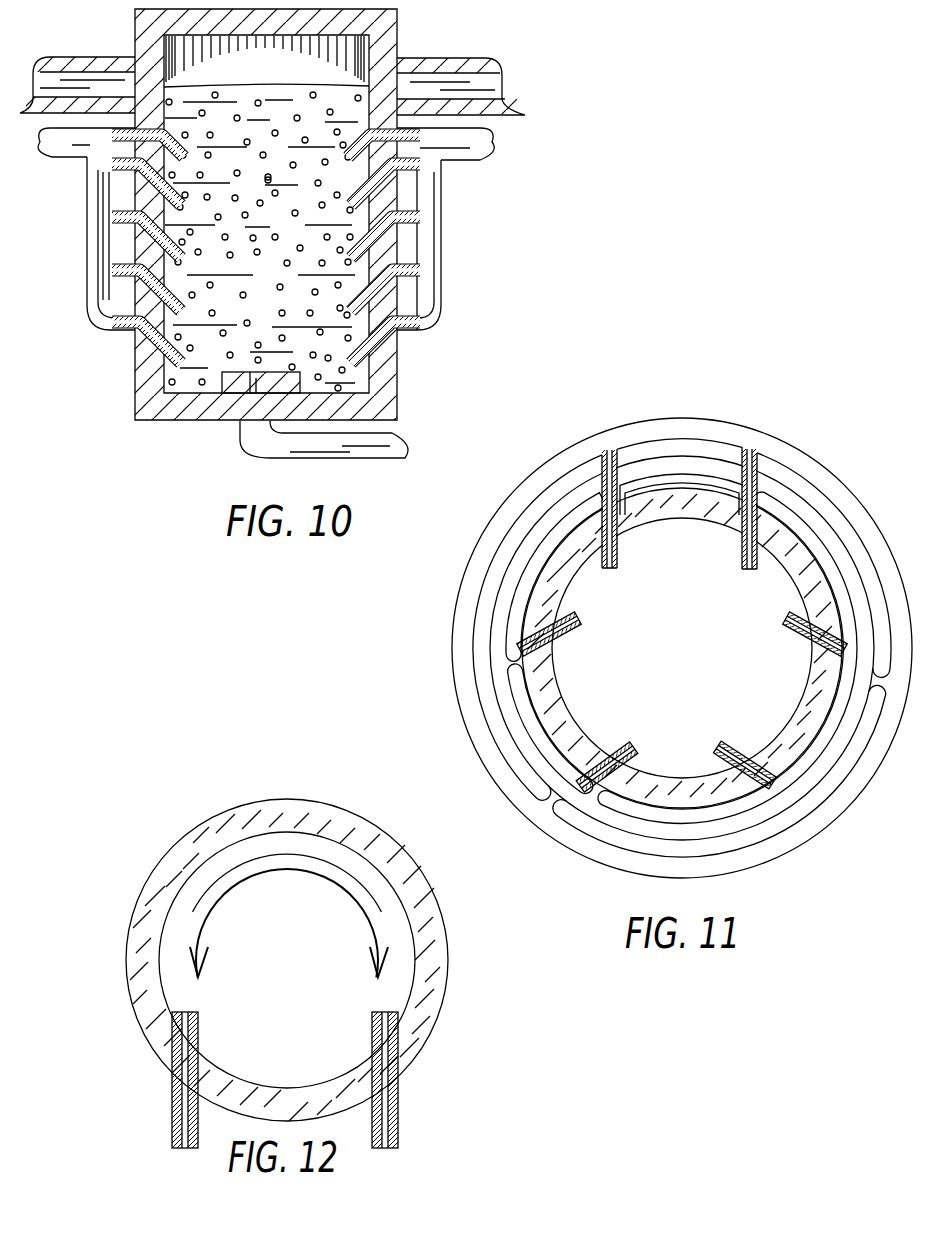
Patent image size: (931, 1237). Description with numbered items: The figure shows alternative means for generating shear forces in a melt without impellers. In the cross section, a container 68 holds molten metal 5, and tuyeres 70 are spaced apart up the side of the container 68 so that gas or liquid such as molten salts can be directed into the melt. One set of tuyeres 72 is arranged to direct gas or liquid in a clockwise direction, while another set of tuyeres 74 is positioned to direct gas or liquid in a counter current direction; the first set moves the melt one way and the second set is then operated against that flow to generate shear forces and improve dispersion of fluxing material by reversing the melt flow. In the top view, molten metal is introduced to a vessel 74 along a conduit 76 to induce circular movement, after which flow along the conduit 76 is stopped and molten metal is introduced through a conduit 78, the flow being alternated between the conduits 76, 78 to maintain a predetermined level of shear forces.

In FIG. 10, the molten metal 5 is at (205, 356).
In FIG. 10, the container 68 is at (400, 410).
In FIG. 11, the container 68 is at (537, 730).
In FIG. 10, the tuyeres 70 is at (380, 183).
In FIG. 11, the set of tuyeres 72 is at (573, 652).
In FIG. 11, the set of tuyeres / vessel 74 is at (617, 540).
In FIG. 12, the set of tuyeres / vessel 74 is at (207, 817).
In FIG. 12, the conduit 76 is at (172, 1108).
In FIG. 12, the conduit 78 is at (400, 1108).